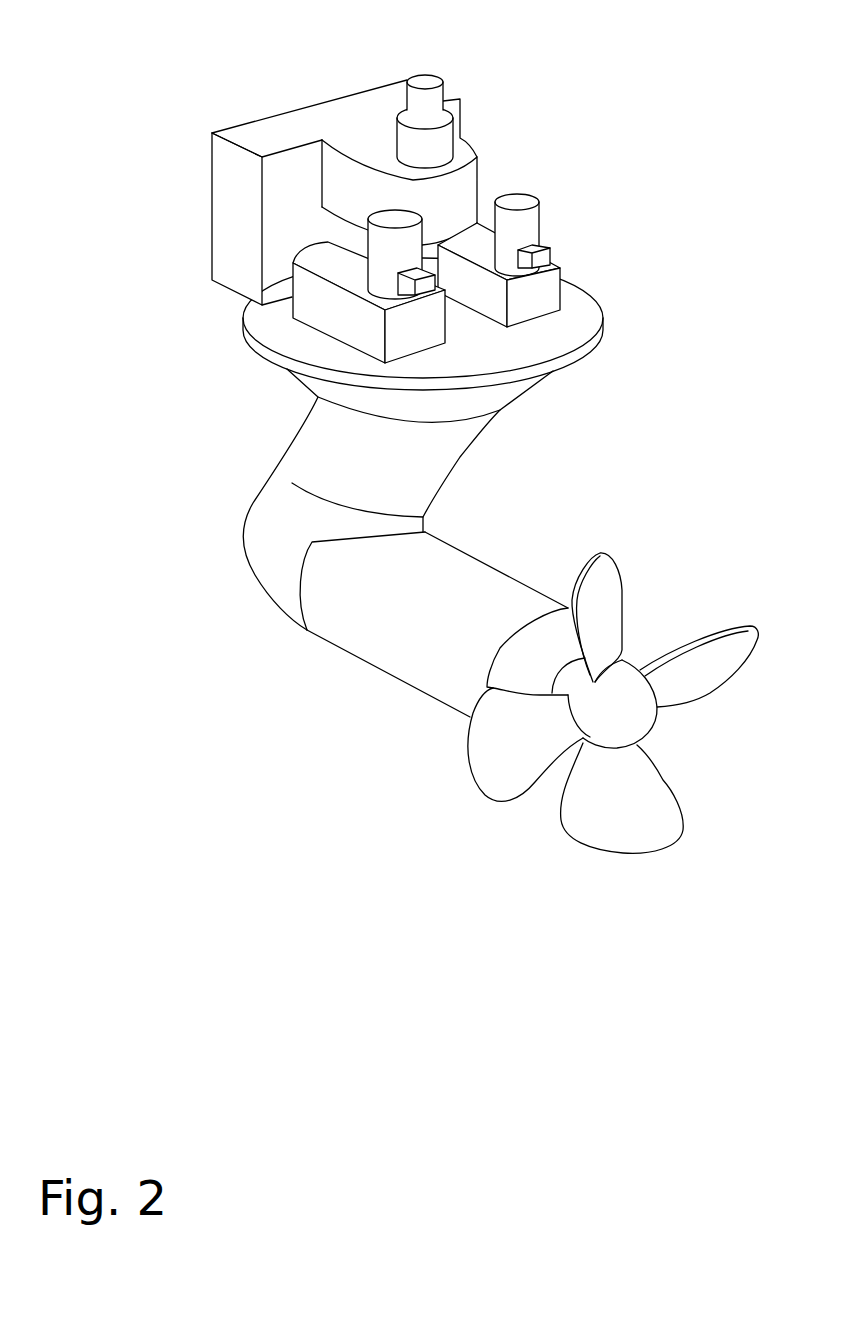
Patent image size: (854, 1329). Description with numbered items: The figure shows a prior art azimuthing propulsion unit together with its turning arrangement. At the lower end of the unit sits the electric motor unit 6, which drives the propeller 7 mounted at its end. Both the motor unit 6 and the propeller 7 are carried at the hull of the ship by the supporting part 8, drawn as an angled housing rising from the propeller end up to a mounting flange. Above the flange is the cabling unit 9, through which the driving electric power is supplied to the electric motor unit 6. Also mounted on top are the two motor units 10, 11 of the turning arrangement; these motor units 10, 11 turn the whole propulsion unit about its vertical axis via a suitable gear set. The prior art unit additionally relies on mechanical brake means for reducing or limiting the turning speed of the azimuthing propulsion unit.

The motor unit 6 is at (478, 552).
The propeller 7 is at (667, 787).
The supporting part 8 is at (457, 470).
The cabling unit 9 is at (300, 107).
The motor unit of the turning arrangement 10 is at (367, 232).
The motor unit of the turning arrangement 11 is at (540, 223).